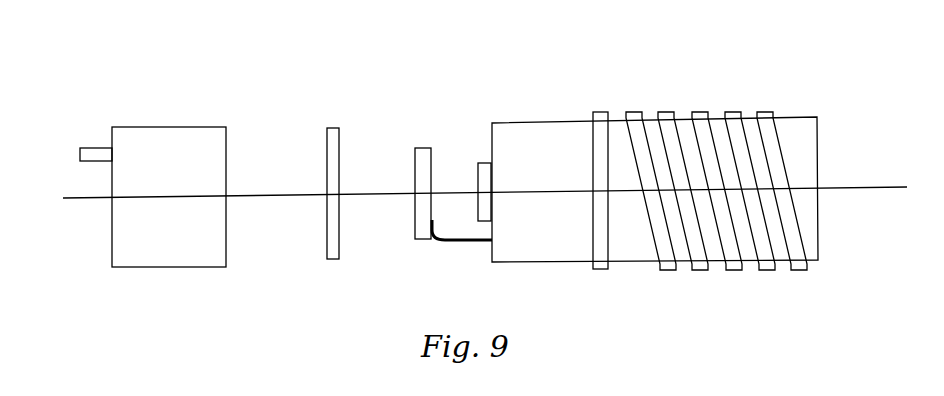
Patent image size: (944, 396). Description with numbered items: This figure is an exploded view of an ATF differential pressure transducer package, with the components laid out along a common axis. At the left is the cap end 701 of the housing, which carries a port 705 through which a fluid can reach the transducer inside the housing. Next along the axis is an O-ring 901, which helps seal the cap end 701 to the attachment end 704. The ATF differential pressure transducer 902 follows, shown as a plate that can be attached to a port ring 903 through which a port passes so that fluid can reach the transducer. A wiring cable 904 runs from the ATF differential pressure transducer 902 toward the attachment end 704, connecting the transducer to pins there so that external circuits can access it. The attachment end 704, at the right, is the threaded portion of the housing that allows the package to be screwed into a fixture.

The cap end 701 is at (148, 155).
The port 705 is at (92, 148).
The attachment end 704 is at (803, 135).
The O-ring 901 is at (327, 157).
The ATF differential pressure transducer 902 is at (422, 187).
The port ring 903 is at (482, 173).
The wiring cable 904 is at (458, 242).